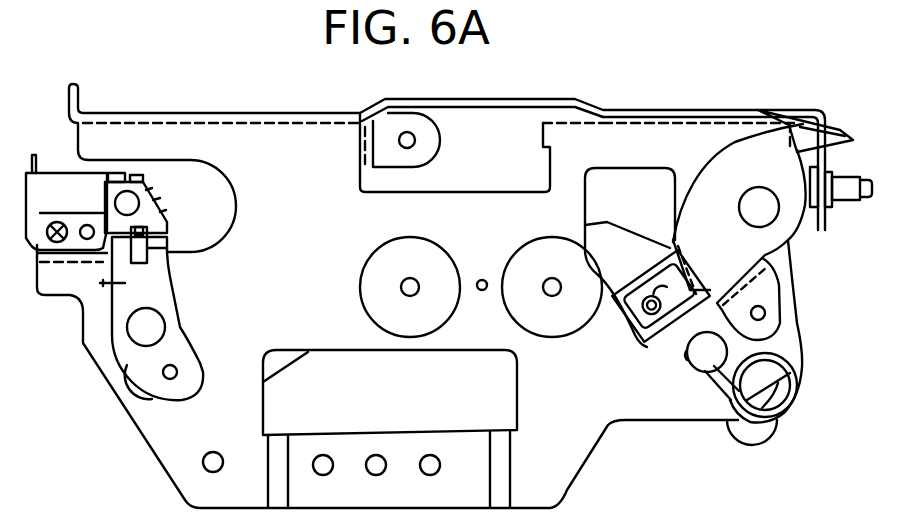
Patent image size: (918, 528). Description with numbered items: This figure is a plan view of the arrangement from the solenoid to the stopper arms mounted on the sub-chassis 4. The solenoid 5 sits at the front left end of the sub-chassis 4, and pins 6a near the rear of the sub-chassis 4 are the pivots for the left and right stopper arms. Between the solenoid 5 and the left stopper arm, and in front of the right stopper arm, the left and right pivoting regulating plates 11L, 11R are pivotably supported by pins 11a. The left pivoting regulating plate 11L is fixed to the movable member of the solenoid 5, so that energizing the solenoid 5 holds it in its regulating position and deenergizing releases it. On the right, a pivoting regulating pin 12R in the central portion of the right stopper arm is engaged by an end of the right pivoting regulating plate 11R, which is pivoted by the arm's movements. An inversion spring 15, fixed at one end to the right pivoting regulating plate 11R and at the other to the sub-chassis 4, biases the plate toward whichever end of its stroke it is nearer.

The sub-chassis 4 is at (282, 137).
The solenoid 5 is at (52, 182).
The pins 6a is at (407, 280).
The left pivoting regulating plate 11L is at (160, 290).
The right pivoting regulating plate 11R is at (727, 153).
The pins 11a is at (153, 333).
The pivoting regulating pin 12R is at (618, 327).
The inversion spring 15 is at (797, 410).